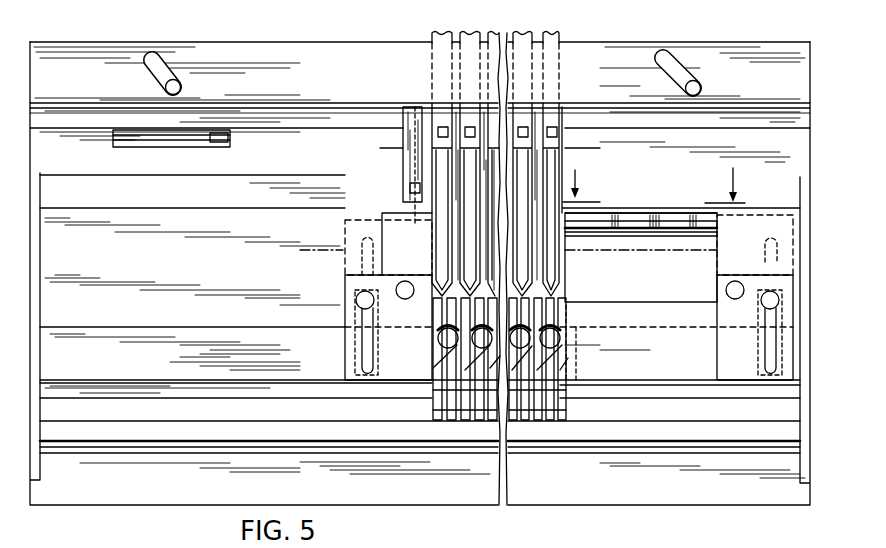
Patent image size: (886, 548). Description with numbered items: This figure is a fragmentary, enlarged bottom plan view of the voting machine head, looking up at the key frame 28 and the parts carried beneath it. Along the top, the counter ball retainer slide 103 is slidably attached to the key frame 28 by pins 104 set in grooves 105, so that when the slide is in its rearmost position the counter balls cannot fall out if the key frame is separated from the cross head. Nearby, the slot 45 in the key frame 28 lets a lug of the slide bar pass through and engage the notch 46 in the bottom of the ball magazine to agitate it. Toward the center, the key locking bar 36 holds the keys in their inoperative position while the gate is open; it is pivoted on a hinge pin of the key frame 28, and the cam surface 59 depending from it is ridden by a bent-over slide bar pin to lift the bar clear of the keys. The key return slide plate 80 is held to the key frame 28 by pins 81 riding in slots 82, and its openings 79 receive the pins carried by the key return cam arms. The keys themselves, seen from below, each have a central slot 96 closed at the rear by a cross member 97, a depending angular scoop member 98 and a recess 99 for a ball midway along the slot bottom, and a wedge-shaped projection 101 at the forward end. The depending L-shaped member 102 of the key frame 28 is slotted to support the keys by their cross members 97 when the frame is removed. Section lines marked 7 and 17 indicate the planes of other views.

The key frame 28 is at (102, 495).
The counter ball retainer slide 103 is at (256, 47).
The grooves 105 is at (158, 72).
The pins 104 is at (184, 89).
The slot 45 is at (143, 143).
The notch 46 is at (217, 140).
The section line 17 is at (415, 107).
The key locking bar 36 is at (390, 215).
The cam surface 59 is at (668, 217).
The key return slide plate 80 is at (657, 310).
The section line 7 is at (657, 184).
The wedge-shaped projection 101 is at (437, 282).
The pins 81 is at (356, 300).
The openings 79 is at (404, 299).
The slots 82 is at (364, 341).
The slot 96 is at (470, 397).
The cross member 97 is at (432, 410).
The L-shaped member 102 is at (665, 403).
The recess 99 is at (462, 335).
The scoop member 98 is at (433, 352).